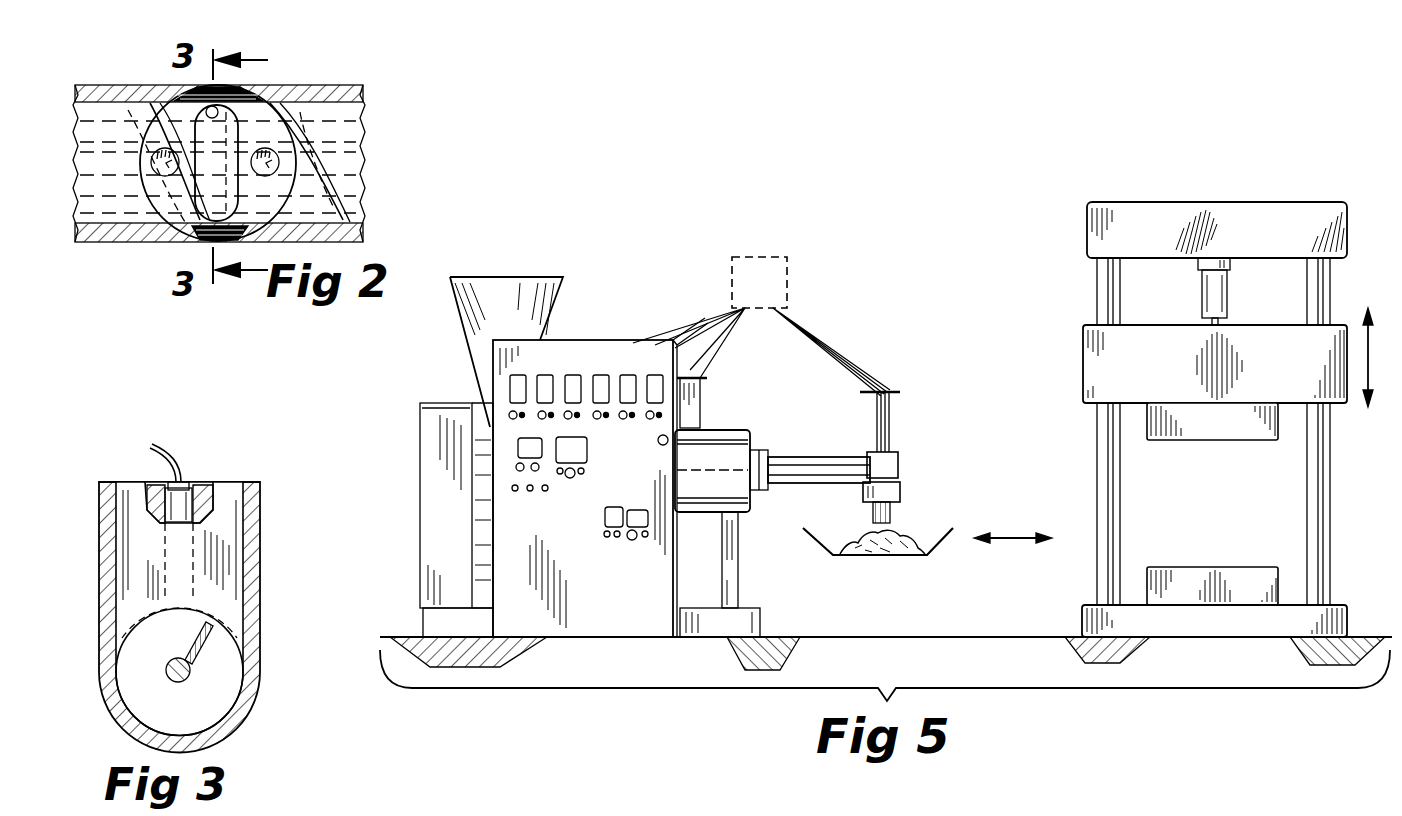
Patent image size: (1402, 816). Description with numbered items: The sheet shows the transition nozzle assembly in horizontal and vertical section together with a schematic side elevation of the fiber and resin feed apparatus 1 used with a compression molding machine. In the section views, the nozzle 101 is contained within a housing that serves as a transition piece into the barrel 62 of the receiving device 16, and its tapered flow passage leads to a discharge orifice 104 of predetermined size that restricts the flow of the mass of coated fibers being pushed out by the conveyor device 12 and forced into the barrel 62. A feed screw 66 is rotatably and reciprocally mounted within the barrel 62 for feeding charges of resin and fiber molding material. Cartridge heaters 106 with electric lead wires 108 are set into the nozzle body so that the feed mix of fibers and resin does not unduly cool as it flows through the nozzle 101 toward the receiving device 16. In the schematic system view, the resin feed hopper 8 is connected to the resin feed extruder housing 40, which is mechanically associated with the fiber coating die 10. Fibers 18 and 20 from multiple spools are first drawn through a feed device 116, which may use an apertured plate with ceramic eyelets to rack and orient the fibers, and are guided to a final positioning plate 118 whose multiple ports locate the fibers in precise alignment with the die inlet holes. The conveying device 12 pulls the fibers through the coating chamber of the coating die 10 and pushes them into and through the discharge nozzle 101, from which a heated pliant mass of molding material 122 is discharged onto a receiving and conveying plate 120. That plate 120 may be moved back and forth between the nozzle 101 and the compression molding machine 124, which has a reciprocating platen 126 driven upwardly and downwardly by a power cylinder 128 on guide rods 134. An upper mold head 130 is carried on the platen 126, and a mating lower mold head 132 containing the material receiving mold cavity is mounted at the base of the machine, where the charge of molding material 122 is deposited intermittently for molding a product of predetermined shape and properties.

In FIG. 5, the fiber and resin feed apparatus 1 is at (604, 302).
In FIG. 5, the resin feed hopper 8 is at (509, 277).
In FIG. 5, the coating die 10 is at (906, 456).
In FIG. 5, the conveyor device 12 is at (905, 492).
In FIG. 2, the receiving device 16 is at (352, 78).
In FIG. 3, the receiving device 16 is at (242, 737).
In FIG. 5, the fiber strand 18 is at (682, 332).
In FIG. 5, the fiber strand 20 is at (703, 350).
In FIG. 5, the resin feed extruder housing 40 is at (803, 462).
In FIG. 2, the barrel 62 is at (300, 85).
In FIG. 3, the barrel 62 is at (104, 706).
In FIG. 2, the feed screw 66 is at (275, 147).
In FIG. 3, the feed screw 66 is at (218, 693).
In FIG. 2, the nozzle 101 is at (140, 228).
In FIG. 3, the nozzle 101 is at (268, 582).
In FIG. 5, the nozzle 101 is at (893, 516).
In FIG. 2, the discharge orifice 104 is at (208, 108).
In FIG. 3, the discharge orifice 104 is at (228, 492).
In FIG. 2, the cartridge heaters 106 is at (270, 166).
In FIG. 3, the cartridge heaters 106 is at (192, 485).
In FIG. 3, the electric lead wires 108 is at (150, 450).
In FIG. 5, the feed device 116 is at (756, 257).
In FIG. 5, the final positioning plate 118 is at (898, 392).
In FIG. 5, the receiving and conveying plate 120 is at (836, 556).
In FIG. 5, the molding material 122 is at (852, 530).
In FIG. 5, the compression molding machine 124 is at (1118, 190).
In FIG. 5, the reciprocating platen 126 is at (1083, 340).
In FIG. 5, the power cylinder 128 is at (1203, 295).
In FIG. 5, the upper mold head 130 is at (1224, 440).
In FIG. 5, the lower mold head 132 is at (1205, 528).
In FIG. 5, the guide rods 134 is at (1103, 457).